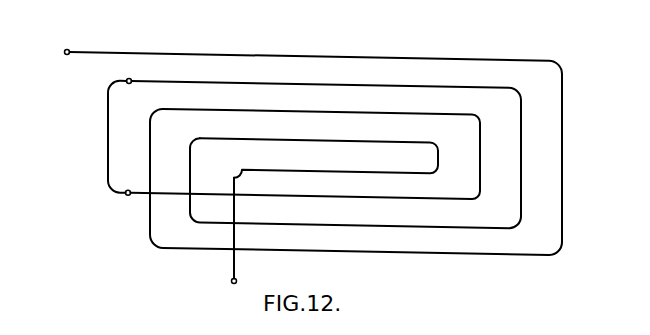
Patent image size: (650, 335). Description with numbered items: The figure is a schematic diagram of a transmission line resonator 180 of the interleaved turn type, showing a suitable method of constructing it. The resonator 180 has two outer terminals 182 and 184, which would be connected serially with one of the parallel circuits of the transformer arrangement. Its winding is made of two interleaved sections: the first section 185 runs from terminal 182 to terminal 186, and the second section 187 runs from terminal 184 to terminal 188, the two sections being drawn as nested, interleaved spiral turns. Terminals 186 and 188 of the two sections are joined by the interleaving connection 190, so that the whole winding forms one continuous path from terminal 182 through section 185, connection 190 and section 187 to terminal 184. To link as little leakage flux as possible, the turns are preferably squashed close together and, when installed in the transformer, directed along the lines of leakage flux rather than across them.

The transmission line resonator 180 is at (618, 153).
The terminal 182 is at (68, 49).
The terminal 184 is at (237, 280).
The first interleaved section 185 is at (602, 87).
The terminal 186 is at (128, 77).
The second interleaved section 187 is at (438, 162).
The terminal 188 is at (128, 195).
The interleaving connection 190 is at (107, 143).